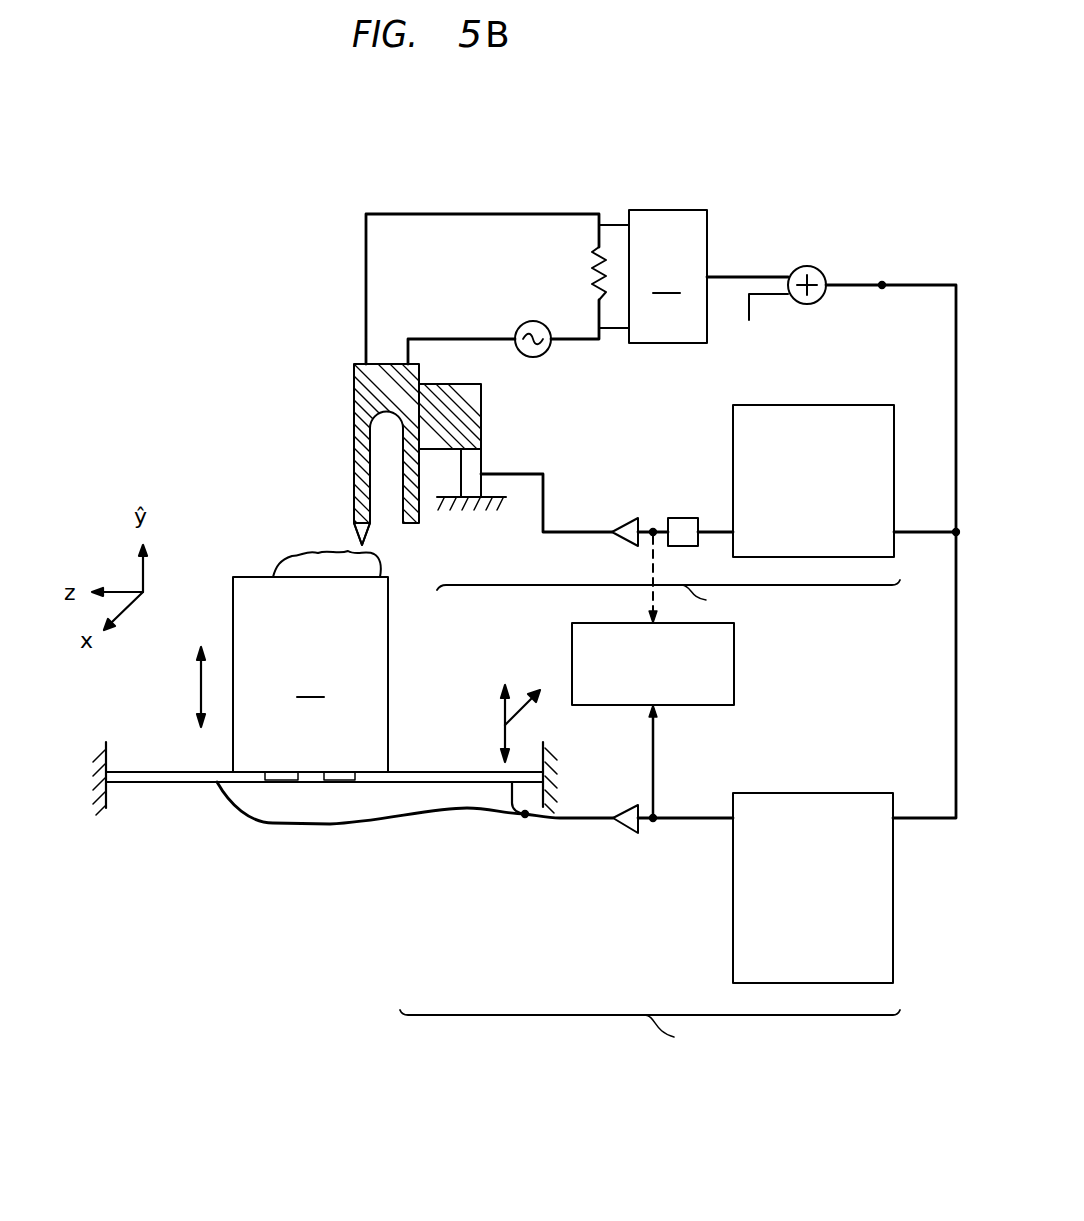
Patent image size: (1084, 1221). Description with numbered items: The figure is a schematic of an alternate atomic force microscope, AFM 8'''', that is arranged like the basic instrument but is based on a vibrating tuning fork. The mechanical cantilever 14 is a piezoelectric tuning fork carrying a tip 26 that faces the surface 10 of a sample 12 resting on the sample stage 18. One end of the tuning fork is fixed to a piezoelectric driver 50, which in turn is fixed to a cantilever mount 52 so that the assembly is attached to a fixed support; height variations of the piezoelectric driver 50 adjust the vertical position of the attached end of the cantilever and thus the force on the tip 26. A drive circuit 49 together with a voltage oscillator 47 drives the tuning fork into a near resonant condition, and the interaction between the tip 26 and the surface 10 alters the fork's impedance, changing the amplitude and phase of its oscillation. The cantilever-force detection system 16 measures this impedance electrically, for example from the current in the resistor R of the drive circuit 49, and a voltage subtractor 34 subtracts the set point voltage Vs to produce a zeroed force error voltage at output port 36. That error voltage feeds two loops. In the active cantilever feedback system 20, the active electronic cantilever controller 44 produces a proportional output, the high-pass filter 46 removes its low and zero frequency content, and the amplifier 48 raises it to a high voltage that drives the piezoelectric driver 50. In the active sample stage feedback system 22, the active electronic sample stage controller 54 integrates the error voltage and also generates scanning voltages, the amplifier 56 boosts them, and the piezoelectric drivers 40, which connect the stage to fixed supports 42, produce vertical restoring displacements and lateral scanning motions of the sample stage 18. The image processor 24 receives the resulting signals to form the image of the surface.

The AFM 8'''' is at (186, 892).
The surface 10 is at (274, 572).
The sample 12 is at (332, 575).
The mechanical cantilever 14 is at (352, 398).
The cantilever-force detection system 16 is at (668, 276).
The sample stage 18 is at (310, 674).
The active cantilever feedback system 20 is at (668, 601).
The active sample stage feedback system 22 is at (650, 1030).
The image processor 24 is at (570, 630).
The tip 26 is at (358, 540).
The voltage subtractor 34 is at (818, 270).
The output port 36 is at (884, 283).
The piezoelectric drivers 40 is at (186, 784).
The fixed supports 42 is at (97, 792).
The active electronic cantilever controller 44 is at (731, 418).
The high-pass filter 46 is at (684, 516).
The voltage oscillator 47 is at (546, 352).
The amplifier 48 is at (622, 546).
The drive circuit 49 is at (273, 288).
The piezoelectric driver 50 is at (484, 458).
The cantilever mount 52 is at (470, 500).
The active electronic sample stage controller 54 is at (731, 798).
The amplifier 56 is at (626, 836).